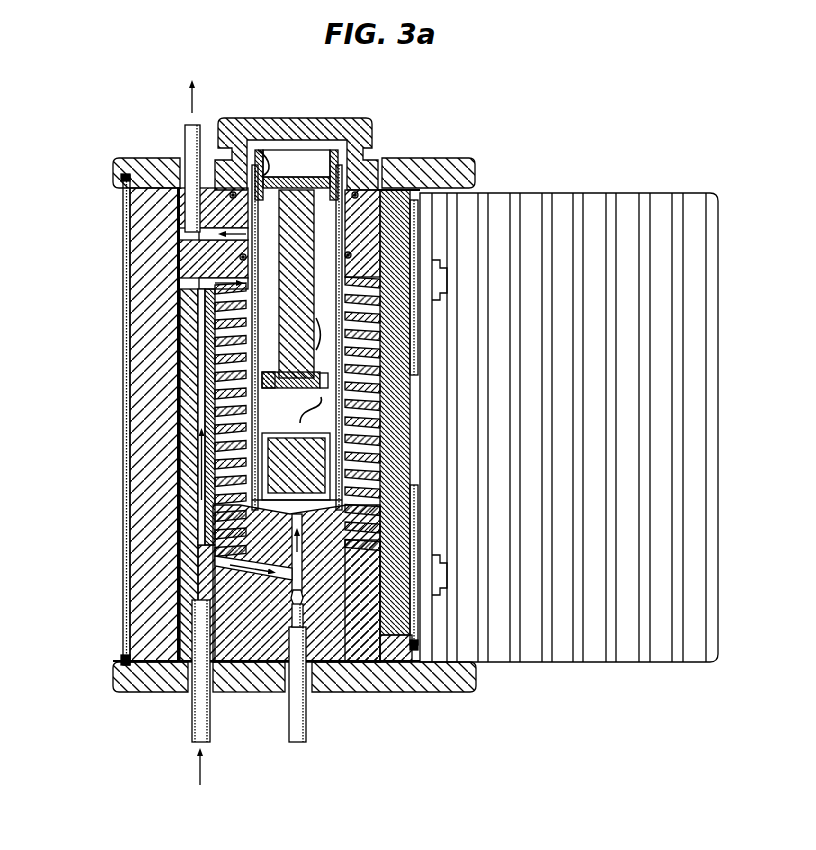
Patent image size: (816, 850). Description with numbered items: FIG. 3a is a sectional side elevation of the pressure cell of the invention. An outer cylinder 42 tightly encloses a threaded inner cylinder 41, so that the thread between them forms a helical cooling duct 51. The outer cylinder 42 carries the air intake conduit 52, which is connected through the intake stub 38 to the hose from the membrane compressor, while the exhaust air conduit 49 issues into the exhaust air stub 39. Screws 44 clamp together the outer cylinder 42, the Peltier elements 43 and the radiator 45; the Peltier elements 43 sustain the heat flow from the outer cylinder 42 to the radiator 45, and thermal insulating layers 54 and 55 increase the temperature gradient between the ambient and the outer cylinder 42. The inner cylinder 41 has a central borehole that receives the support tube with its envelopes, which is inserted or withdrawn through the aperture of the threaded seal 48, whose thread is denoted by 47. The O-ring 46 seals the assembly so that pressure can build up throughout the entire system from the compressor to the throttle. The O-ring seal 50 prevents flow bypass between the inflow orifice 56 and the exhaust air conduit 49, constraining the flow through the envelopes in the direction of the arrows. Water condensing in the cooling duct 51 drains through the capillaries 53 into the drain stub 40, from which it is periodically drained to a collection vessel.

The intake stub 38 is at (207, 744).
The exhaust air stub 39 is at (183, 140).
The drain stub 40 is at (289, 722).
The inner cylinder 41 is at (348, 645).
The outer cylinder 42 is at (412, 640).
The Peltier elements 43 is at (410, 690).
The screws 44 is at (440, 578).
The radiator 45 is at (562, 635).
The O-ring 46 is at (406, 190).
The thread 47 is at (370, 162).
The threaded seal 48 is at (291, 120).
The exhaust air conduit 49 is at (232, 226).
The O-ring seal 50 is at (215, 268).
The helical cooling duct 51 is at (200, 373).
The air intake conduit 52 is at (205, 503).
The capillaries 53 is at (218, 565).
The thermal insulating layer 54 is at (190, 610).
The thermal insulating layer 55 is at (152, 683).
The inflow orifice 56 is at (218, 522).